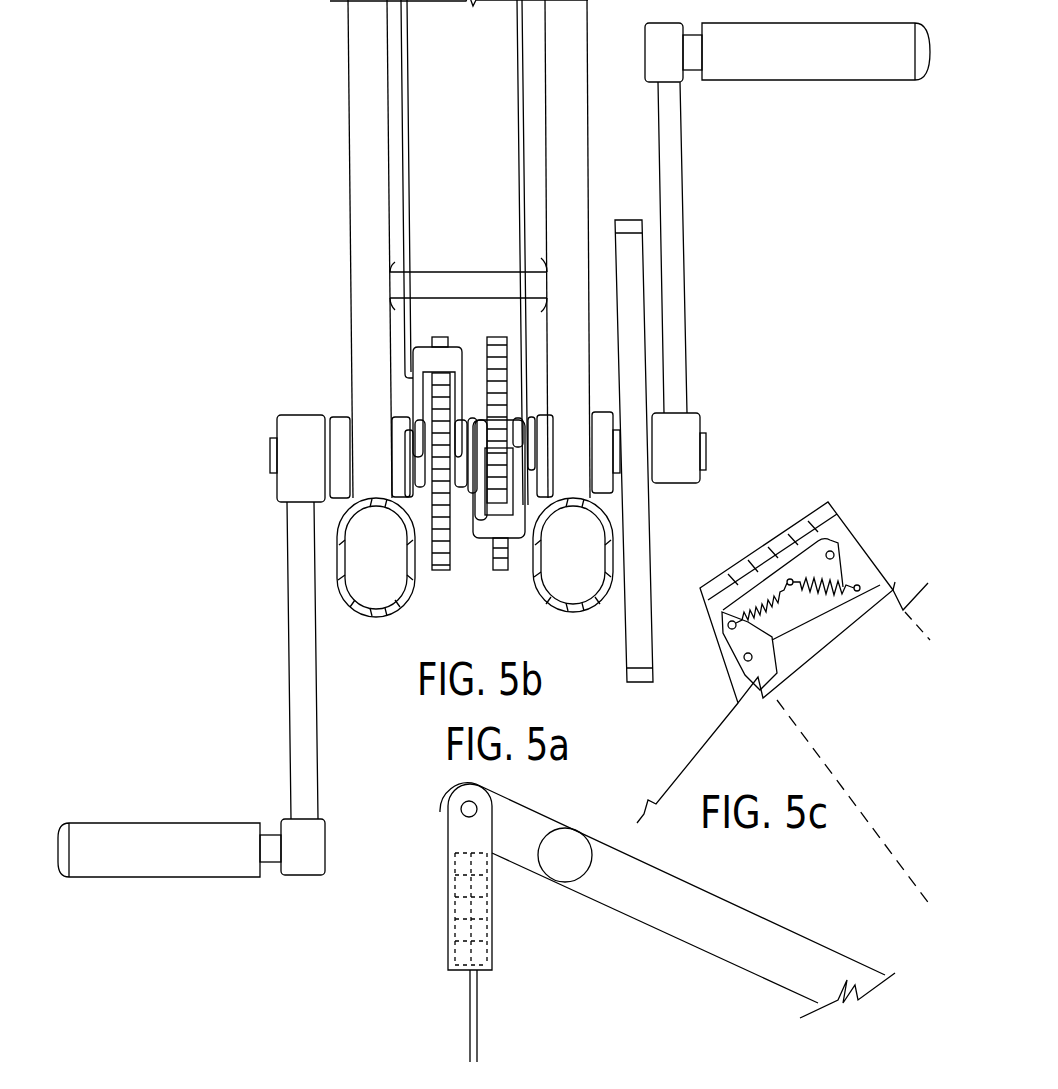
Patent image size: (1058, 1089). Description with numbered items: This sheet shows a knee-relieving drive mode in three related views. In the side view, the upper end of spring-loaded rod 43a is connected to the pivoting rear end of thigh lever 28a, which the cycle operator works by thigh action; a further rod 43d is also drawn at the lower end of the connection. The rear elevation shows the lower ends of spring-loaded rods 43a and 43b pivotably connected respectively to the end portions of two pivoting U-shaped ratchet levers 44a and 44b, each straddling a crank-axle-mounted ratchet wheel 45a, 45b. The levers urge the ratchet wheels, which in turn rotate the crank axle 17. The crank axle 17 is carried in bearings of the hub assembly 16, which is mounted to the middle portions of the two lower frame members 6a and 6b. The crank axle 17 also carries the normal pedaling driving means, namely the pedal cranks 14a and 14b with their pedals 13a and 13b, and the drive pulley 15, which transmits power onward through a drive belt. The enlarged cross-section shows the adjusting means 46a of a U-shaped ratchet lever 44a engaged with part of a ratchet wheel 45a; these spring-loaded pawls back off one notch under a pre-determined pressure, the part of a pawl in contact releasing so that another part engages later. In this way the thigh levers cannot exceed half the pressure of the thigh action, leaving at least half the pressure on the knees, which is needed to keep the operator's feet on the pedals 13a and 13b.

In FIG. 5b, the lower frame member 6a is at (580, 615).
In FIG. 5b, the lower frame member 6b is at (385, 618).
In FIG. 5b, the pedal 13a is at (790, 81).
In FIG. 5b, the pedal 13b is at (223, 802).
In FIG. 5b, the pedal crank 14a is at (690, 287).
In FIG. 5b, the pedal crank 14b is at (281, 644).
In FIG. 5b, the drive pulley 15 is at (655, 538).
In FIG. 5b, the hub assembly 16 is at (332, 408).
In FIG. 5b, the crank axle 17 is at (708, 448).
In FIG. 5a, the thigh lever 28a is at (628, 920).
In FIG. 5b, the spring-loaded rod 43a is at (518, 228).
In FIG. 5b, the spring-loaded rod 43b is at (412, 253).
In FIG. 5a, the cable 43d is at (466, 980).
In FIG. 5b, the pivoting U-shaped ratchet lever 44a is at (520, 540).
In FIG. 5c, the pivoting U-shaped ratchet lever 44a is at (818, 498).
In FIG. 5b, the pivoting U-shaped ratchet lever 44b is at (462, 343).
In FIG. 5b, the crank-axle-mounted ratchet wheel 45a is at (492, 548).
In FIG. 5c, the crank-axle-mounted ratchet wheel 45a is at (895, 582).
In FIG. 5b, the crank-axle-mounted ratchet wheel 45b is at (438, 575).
In FIG. 5c, the adjusting means 46a is at (833, 547).